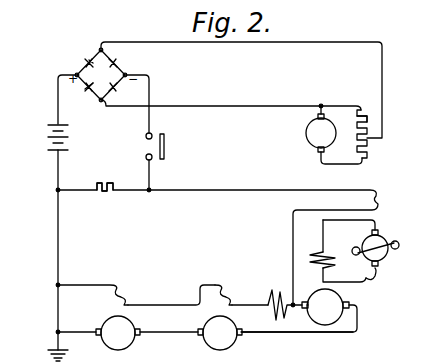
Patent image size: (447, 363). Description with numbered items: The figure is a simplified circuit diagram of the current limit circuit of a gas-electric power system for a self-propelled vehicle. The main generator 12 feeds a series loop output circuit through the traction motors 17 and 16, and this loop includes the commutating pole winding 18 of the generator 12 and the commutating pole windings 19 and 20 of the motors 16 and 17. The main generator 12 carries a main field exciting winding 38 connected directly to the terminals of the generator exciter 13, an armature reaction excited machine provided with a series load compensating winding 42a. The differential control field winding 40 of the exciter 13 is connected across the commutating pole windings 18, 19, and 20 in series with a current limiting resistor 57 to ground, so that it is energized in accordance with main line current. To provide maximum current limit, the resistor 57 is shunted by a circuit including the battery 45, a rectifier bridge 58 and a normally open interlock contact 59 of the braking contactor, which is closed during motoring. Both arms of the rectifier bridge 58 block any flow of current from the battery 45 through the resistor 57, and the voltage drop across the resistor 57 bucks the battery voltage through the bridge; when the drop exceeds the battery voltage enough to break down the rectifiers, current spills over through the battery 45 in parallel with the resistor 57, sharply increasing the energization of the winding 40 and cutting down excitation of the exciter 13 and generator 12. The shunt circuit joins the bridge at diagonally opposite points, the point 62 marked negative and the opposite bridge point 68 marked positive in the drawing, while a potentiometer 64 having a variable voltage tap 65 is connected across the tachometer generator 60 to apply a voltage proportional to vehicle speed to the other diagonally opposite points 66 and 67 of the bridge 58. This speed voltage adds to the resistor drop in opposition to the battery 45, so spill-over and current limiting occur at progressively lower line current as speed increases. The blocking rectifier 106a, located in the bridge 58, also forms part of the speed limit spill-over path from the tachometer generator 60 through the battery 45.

The rectifier bridge 58 is at (110, 83).
The diagonally opposite point of the rectifier bridge 67 is at (100, 50).
The rectifier positive terminal 68 is at (77, 74).
The diagonally opposite point of the rectifier bridge 62 is at (126, 74).
The diagonally opposite point of the rectifier bridge 66 is at (100, 101).
The blocking rectifier 106a is at (85, 89).
The battery 45 is at (76, 135).
The interlock contact 59 is at (165, 146).
The control field winding 40 is at (380, 194).
The current limiting resistor 57 is at (104, 192).
The tachometer generator 60 is at (305, 132).
The potentiometer 64 is at (358, 122).
The variable voltage tap 65 is at (367, 148).
The main field exciting winding 38 is at (332, 260).
The series load compensating winding 42a is at (380, 279).
The generator exciter 13 is at (384, 239).
The commutating pole winding 20 is at (123, 297).
The commutating pole winding 19 is at (228, 298).
The commutating pole winding 18 is at (273, 298).
The main generator 12 is at (300, 310).
The traction motor 17 is at (99, 333).
The traction motor 16 is at (220, 333).